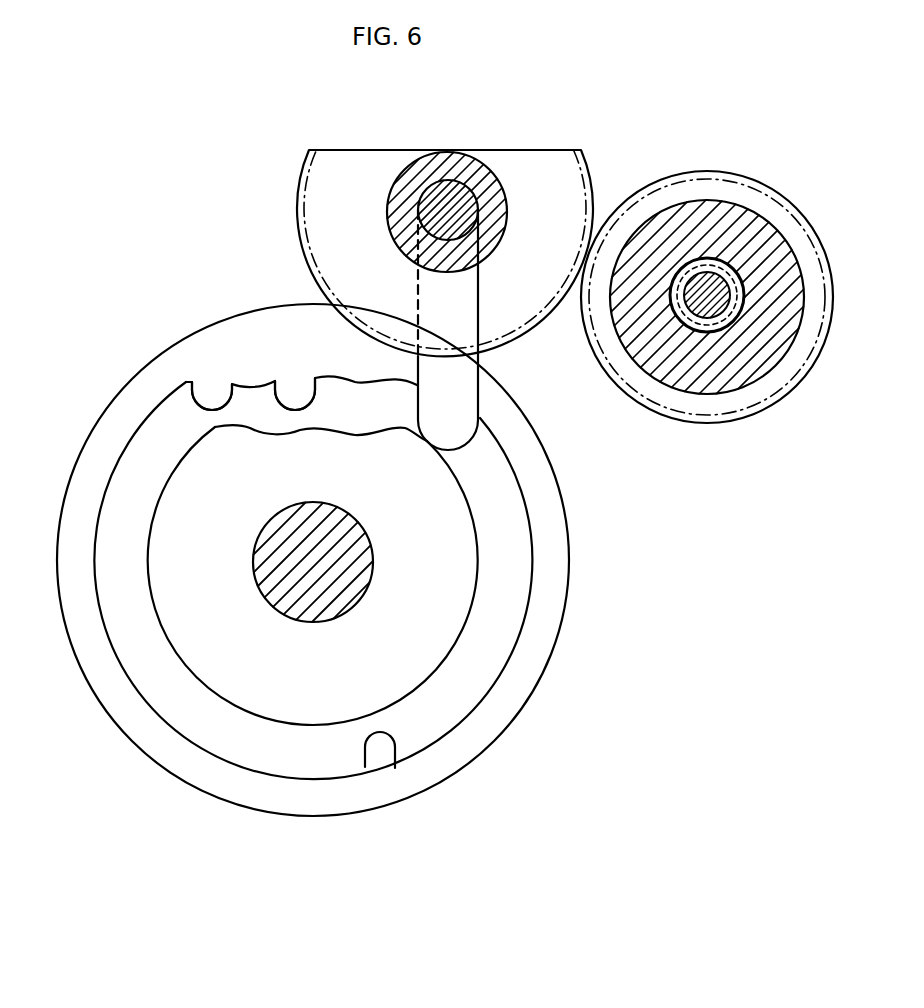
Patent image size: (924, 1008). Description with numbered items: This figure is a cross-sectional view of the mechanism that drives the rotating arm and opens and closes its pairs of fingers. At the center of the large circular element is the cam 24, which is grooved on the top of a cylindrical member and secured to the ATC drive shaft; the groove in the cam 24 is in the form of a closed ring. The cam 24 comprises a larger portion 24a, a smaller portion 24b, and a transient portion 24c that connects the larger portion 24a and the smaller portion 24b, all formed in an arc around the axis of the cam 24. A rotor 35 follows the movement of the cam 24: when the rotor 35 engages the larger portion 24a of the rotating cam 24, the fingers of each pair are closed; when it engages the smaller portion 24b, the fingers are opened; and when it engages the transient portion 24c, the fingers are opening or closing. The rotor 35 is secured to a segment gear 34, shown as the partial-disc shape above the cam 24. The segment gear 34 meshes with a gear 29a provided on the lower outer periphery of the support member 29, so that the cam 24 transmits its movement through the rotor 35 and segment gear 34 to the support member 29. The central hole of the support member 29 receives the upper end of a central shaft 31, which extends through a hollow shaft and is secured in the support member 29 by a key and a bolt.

The cam 24 is at (528, 615).
The larger portion 24a is at (395, 768).
The smaller portion 24b is at (275, 380).
The transient portion 24c is at (192, 383).
The support member 29 is at (740, 258).
The gear 29a is at (787, 195).
The central shaft 31 is at (738, 296).
The segment gear 34 is at (553, 155).
The rotor 35 is at (470, 398).